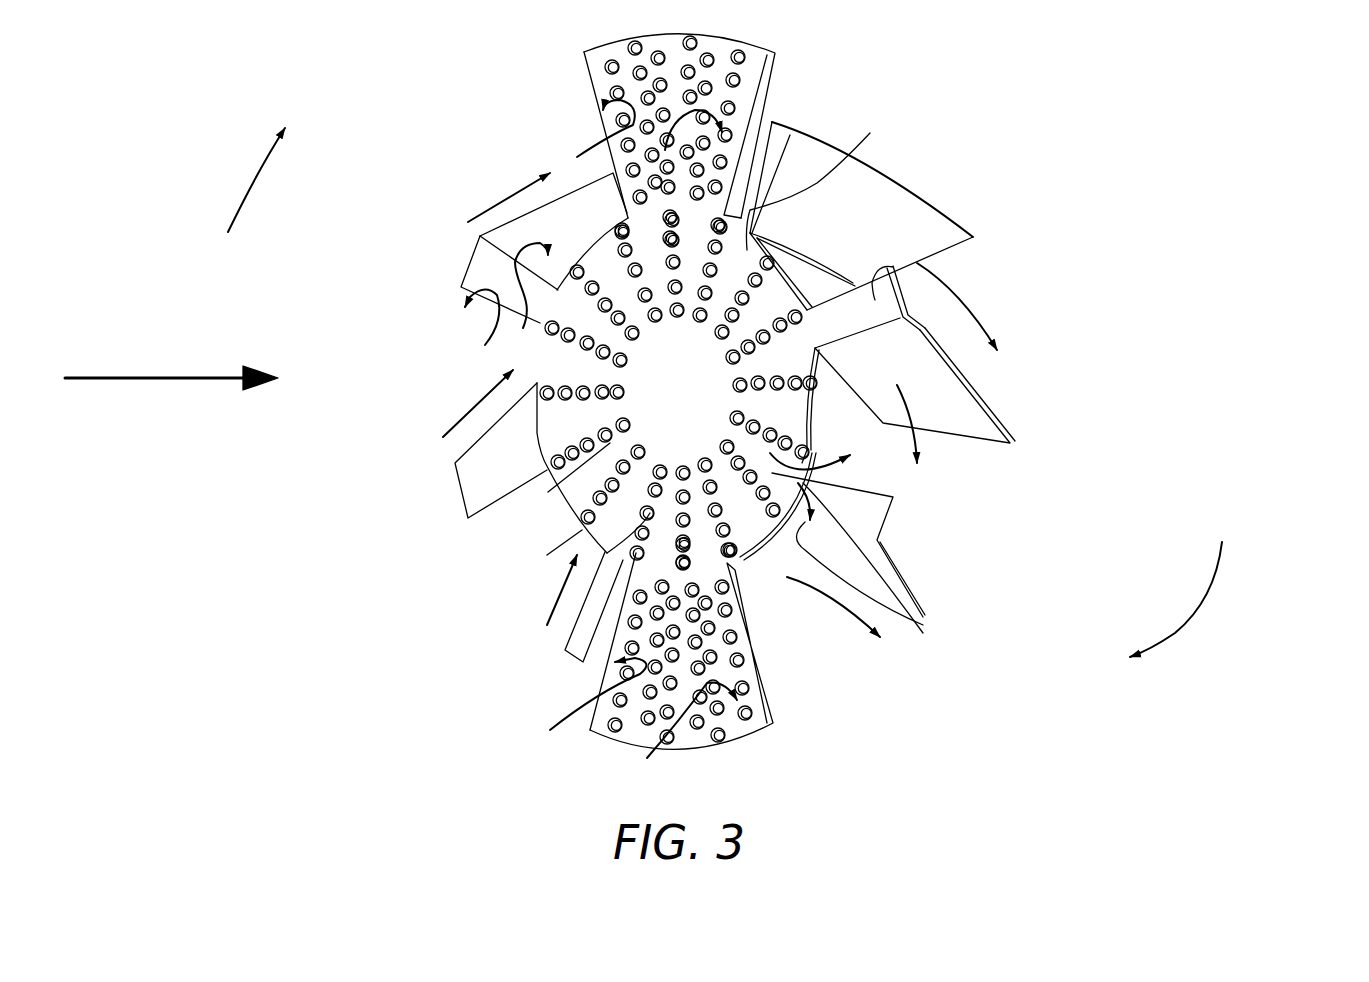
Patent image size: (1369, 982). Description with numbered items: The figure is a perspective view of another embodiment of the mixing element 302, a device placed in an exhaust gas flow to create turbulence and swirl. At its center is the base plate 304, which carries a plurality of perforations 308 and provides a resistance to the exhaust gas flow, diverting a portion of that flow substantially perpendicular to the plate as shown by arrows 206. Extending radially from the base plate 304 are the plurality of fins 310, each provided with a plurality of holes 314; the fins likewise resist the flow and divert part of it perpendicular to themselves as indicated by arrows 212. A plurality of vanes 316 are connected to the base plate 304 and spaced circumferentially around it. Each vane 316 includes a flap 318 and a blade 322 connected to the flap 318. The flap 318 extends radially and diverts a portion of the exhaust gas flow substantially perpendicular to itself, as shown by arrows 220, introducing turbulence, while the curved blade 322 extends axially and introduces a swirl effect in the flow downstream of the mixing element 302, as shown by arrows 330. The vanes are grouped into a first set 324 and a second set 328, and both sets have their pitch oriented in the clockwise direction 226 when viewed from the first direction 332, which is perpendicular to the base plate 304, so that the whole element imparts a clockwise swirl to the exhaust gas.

The arrows 206 is at (578, 508).
The arrows 212 is at (600, 148).
The arrows 220 is at (475, 255).
The clockwise direction 226 is at (250, 178).
The mixing element 302 is at (1132, 197).
The base plate 304 is at (825, 174).
The perforations 308 is at (783, 243).
The fins 310 is at (752, 92).
The holes 314 is at (606, 68).
The vanes 316 is at (1060, 435).
The flap 318 is at (803, 310).
The blade 322 is at (953, 407).
The first set 324 is at (1183, 357).
The second set 328 is at (432, 512).
The arrows 330 is at (522, 170).
The first direction 332 is at (173, 378).